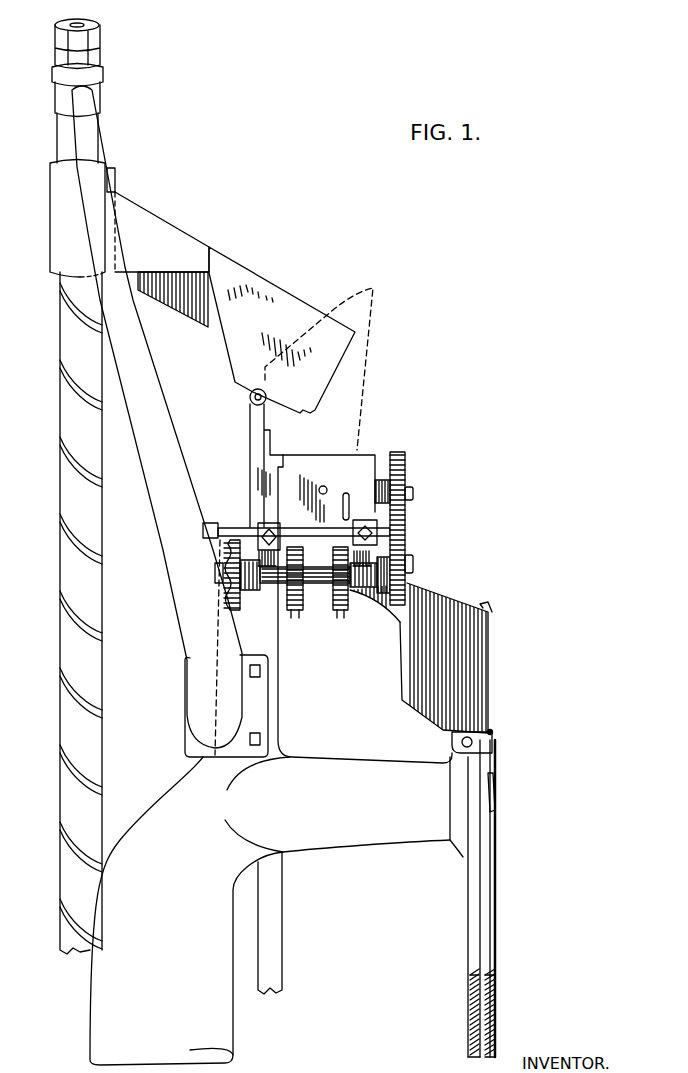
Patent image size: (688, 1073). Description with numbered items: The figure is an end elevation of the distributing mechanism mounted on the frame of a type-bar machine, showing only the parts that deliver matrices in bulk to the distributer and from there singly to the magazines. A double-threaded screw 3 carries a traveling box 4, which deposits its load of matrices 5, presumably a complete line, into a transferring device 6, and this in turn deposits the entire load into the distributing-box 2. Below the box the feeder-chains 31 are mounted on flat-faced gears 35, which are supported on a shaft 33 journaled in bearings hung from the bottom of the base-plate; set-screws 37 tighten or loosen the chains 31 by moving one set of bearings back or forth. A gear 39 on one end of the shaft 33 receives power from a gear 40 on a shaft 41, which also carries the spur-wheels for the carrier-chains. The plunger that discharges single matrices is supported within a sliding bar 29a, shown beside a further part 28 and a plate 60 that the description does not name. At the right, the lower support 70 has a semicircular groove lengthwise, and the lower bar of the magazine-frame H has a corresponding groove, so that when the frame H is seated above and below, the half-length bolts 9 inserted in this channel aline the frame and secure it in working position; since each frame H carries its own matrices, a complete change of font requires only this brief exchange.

The distributing-box 2 is at (342, 455).
The double-threaded screw 3 is at (60, 407).
The traveling box 4 is at (158, 220).
The matrices 5 is at (177, 310).
The transferring device 6 is at (282, 330).
The half-length bolt 9 is at (473, 743).
The worm gear 28 is at (223, 600).
The sliding bar 29a is at (225, 525).
The feeder-chain 31 is at (299, 612).
The shaft 33 is at (413, 563).
The flat-faced gear 35 is at (340, 603).
The set-screw 37 is at (405, 533).
The gear 39 is at (408, 585).
The gear 40 is at (405, 463).
The shaft 41 is at (413, 492).
The guard plate 60 is at (402, 668).
The lower support 70 is at (452, 735).
The magazine-frame H is at (473, 730).